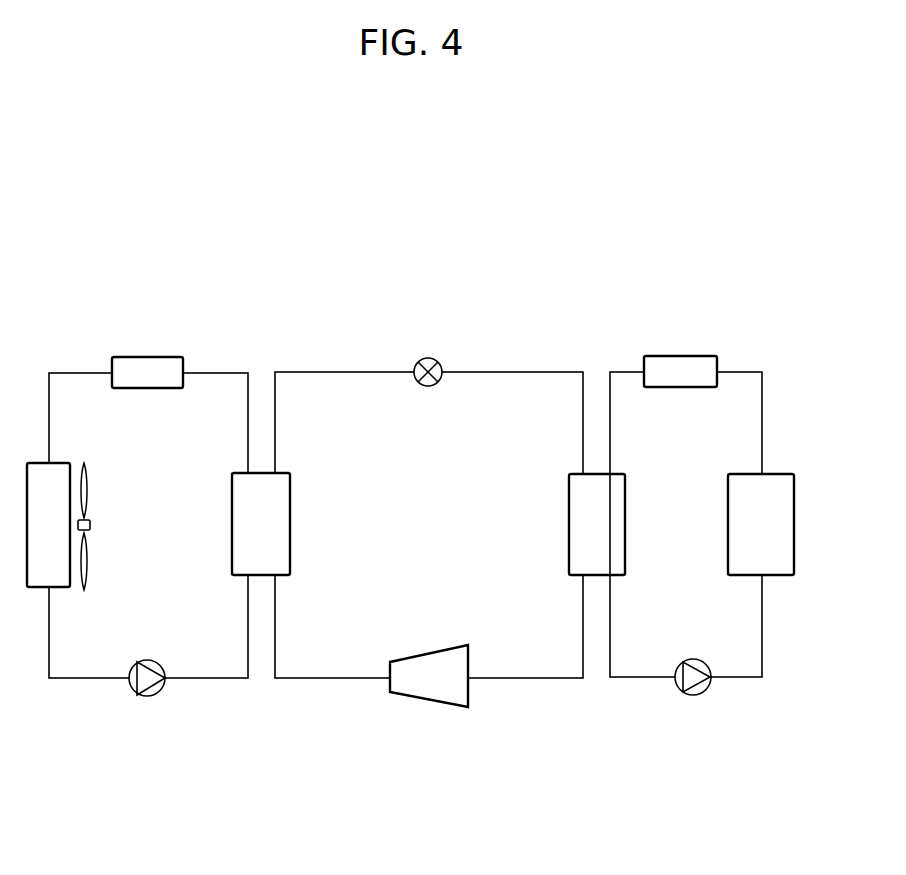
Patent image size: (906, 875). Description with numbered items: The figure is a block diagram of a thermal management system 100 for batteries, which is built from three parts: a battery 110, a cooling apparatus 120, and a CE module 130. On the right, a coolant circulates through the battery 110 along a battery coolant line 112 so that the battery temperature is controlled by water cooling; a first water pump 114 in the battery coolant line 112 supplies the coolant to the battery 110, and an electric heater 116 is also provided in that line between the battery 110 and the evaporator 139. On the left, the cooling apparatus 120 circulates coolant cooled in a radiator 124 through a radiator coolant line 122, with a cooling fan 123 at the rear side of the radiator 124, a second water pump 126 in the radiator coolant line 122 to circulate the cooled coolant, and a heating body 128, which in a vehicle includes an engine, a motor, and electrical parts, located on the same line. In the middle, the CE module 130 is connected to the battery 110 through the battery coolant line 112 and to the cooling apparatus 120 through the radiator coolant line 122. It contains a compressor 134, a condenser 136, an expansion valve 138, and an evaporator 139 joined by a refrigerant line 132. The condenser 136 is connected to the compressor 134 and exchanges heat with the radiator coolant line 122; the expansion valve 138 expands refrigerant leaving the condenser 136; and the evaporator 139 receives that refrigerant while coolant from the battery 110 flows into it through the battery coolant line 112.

The thermal management system 100 is at (394, 232).
The battery 110 is at (728, 505).
The battery coolant line 112 is at (748, 372).
The first water pump 114 is at (692, 693).
The electric heater 116 is at (687, 356).
The cooling apparatus 120 is at (137, 509).
The radiator coolant line 122 is at (88, 680).
The cooling fan 123 is at (88, 490).
The radiator 124 is at (64, 462).
The second water pump 126 is at (147, 695).
The heating body 128 is at (152, 357).
The CE module 130 is at (428, 510).
The refrigerant line 132 is at (313, 372).
The compressor 134 is at (430, 702).
The condenser 136 is at (232, 523).
The expansion valve 138 is at (428, 357).
The evaporator 139 is at (625, 542).